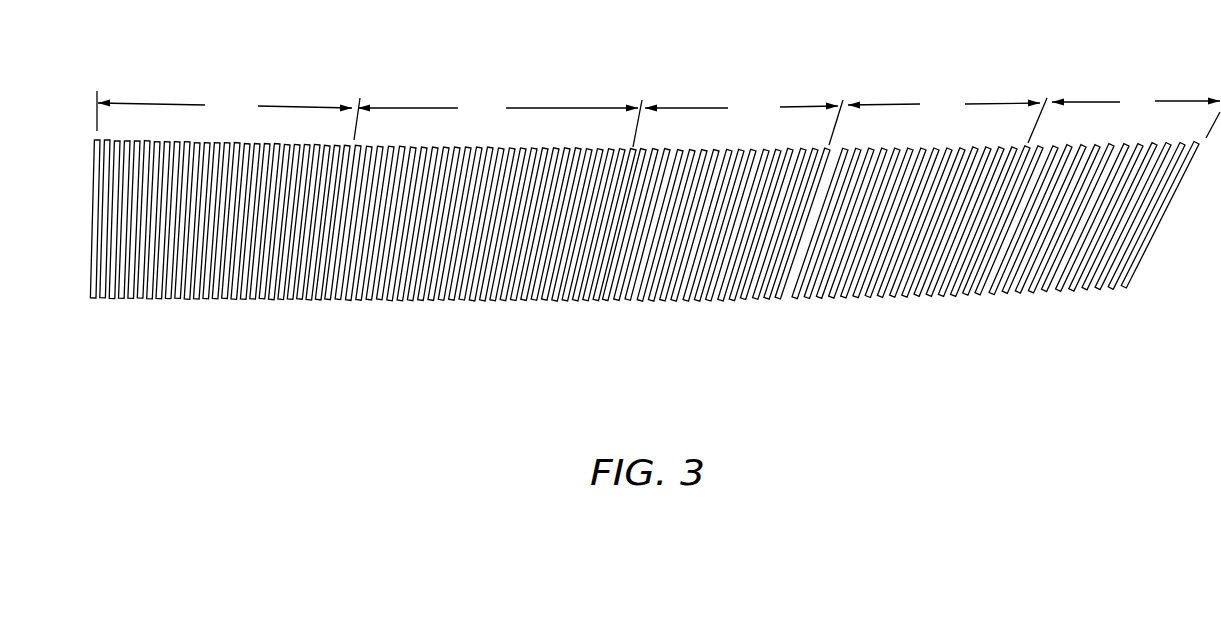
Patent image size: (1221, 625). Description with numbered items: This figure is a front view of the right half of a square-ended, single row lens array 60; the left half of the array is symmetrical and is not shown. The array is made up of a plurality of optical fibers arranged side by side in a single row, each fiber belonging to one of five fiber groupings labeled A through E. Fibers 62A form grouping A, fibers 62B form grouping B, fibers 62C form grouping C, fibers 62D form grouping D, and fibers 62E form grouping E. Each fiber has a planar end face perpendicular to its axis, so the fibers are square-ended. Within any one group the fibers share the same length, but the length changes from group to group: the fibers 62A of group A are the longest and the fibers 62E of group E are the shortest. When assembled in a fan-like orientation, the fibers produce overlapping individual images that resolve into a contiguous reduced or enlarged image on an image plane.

The single row lens array 60 is at (696, 93).
The fibers of grouping A 62A is at (148, 140).
The fibers of grouping B 62B is at (388, 148).
The fibers of grouping C 62C is at (743, 150).
The fibers of grouping D 62D is at (920, 150).
The fibers of grouping E 62E is at (1110, 147).